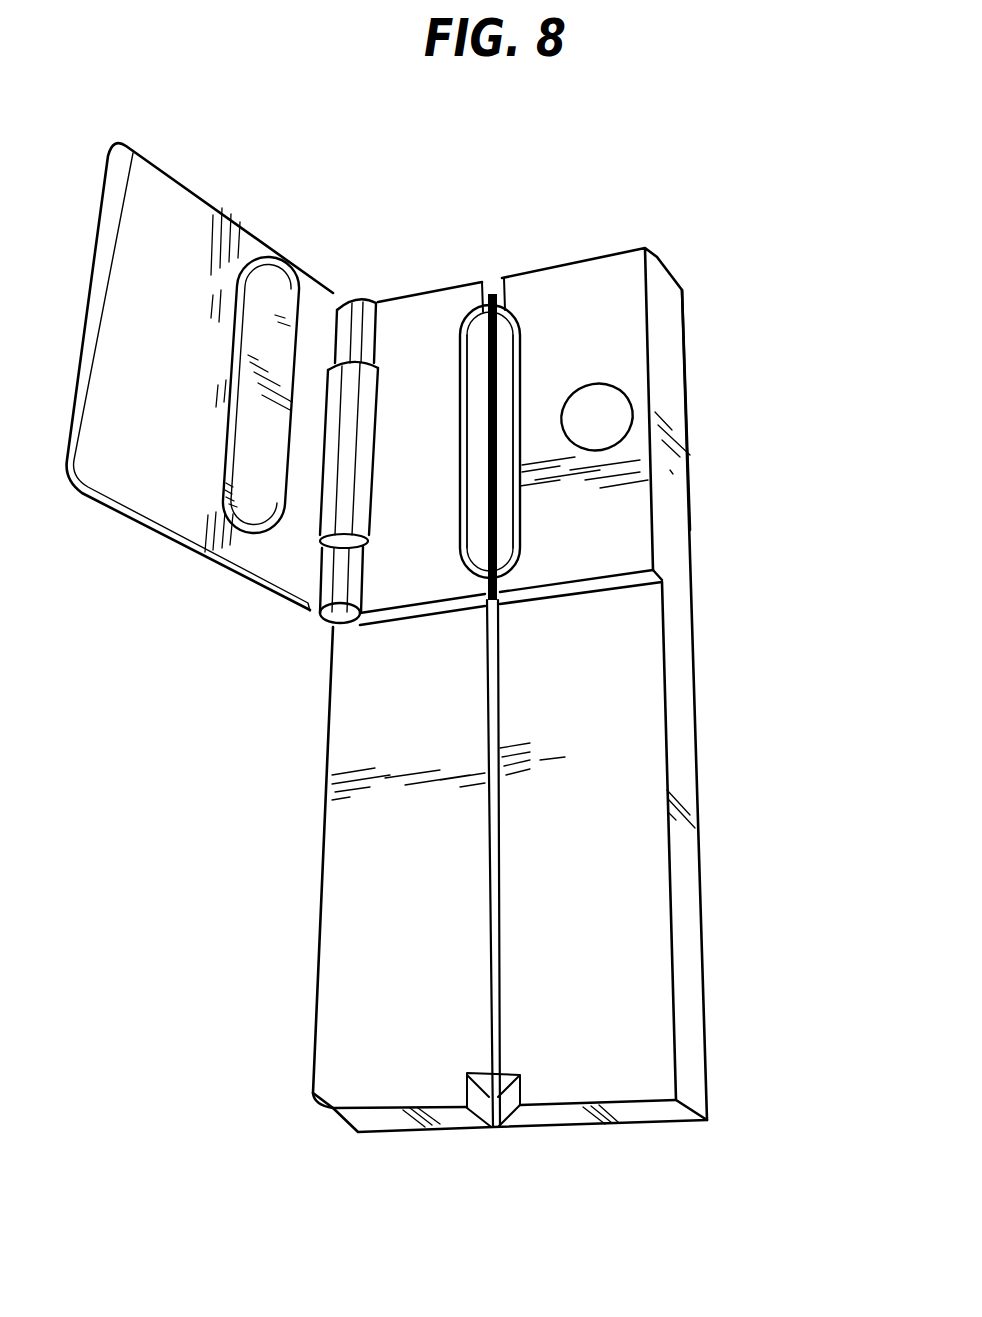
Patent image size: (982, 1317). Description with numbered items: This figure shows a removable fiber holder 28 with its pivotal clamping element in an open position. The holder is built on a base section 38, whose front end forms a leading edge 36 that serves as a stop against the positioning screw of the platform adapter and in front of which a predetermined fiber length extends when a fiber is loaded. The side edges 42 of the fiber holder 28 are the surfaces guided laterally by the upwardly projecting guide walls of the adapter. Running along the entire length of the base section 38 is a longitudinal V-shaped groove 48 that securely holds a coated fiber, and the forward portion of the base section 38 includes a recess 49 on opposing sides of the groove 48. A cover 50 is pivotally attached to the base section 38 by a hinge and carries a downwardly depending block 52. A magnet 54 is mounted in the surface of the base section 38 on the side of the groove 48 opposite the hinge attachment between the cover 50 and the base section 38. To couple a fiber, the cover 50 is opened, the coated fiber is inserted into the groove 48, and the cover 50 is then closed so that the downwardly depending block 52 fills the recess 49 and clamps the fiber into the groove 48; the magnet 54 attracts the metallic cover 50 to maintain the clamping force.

The removable fiber holder 28 is at (452, 621).
The leading edge 36 is at (558, 387).
The base section 38 is at (514, 711).
The side edges 42 is at (684, 938).
The longitudinal V-shaped groove 48 is at (483, 903).
The recess 49 is at (468, 327).
The cover 50 is at (200, 360).
The downwardly depending block 52 is at (277, 290).
The magnet 54 is at (605, 400).